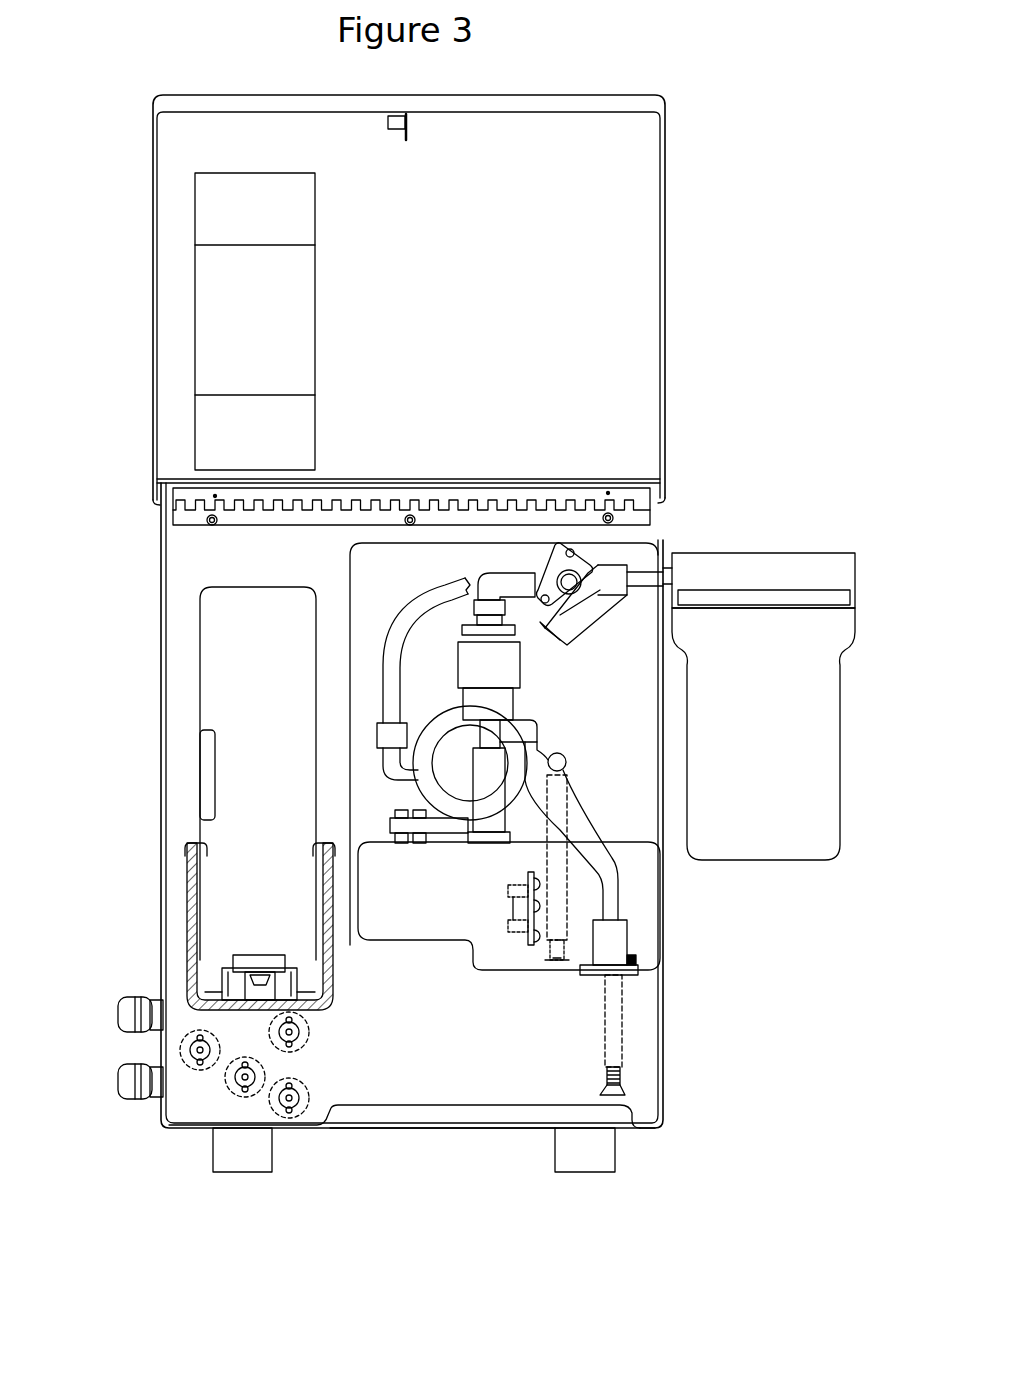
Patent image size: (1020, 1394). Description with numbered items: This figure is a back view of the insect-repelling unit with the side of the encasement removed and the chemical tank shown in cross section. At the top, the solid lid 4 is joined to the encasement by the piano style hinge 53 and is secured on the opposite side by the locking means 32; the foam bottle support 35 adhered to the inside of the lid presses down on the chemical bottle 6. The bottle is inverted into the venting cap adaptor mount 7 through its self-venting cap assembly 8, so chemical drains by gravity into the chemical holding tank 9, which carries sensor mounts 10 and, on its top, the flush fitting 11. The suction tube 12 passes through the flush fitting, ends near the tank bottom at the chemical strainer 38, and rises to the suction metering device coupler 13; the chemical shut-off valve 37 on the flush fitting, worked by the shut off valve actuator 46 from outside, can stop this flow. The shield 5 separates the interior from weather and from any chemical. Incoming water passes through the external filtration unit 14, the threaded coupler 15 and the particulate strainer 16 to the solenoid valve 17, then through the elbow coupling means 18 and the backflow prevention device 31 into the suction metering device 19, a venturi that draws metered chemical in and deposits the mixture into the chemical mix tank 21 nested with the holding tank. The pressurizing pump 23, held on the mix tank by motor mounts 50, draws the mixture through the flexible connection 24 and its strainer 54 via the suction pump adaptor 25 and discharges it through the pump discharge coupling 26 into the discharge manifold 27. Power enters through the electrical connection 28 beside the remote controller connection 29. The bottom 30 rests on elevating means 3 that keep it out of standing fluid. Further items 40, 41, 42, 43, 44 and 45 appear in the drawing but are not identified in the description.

The elevating means 3 is at (617, 1180).
The solid lid 4 is at (613, 253).
The shield 5 is at (350, 665).
The chemical bottle 6 is at (218, 608).
The venting cap adaptor mount 7 is at (260, 977).
The self-venting cap assembly 8 is at (212, 982).
The chemical holding tank 9 is at (647, 1022).
The sensor mounts 10 is at (263, 1112).
The flush fitting 11 is at (598, 962).
The suction tube 12 is at (625, 1047).
The suction metering device coupler 13 is at (543, 735).
The external filtration unit 14 is at (858, 558).
The threaded coupler 15 is at (663, 556).
The particulate strainer 16 is at (596, 607).
The solenoid valve 17 is at (582, 558).
The coupling means 18 is at (508, 565).
The suction metering device 19 is at (518, 700).
The chemical mix tank 21 is at (380, 867).
The pressurizing pump 23 is at (432, 785).
The flexible connection 24 is at (570, 885).
The suction pump adaptor 25 is at (572, 762).
The pump discharge coupling 26 is at (376, 738).
The discharge manifold 27 is at (380, 624).
The electrical connection 28 is at (115, 1083).
The remote controller connection 29 is at (117, 1012).
The bottom 30 is at (540, 1133).
The backflow prevention device 31 is at (520, 663).
The locking means 32 is at (415, 127).
The foam bottle support 35 is at (225, 305).
The chemical shut-off valve 37 is at (628, 924).
The chemical strainer 38 is at (630, 1093).
The connector 40 is at (294, 1105).
The connector 41 is at (250, 1082).
The connector 42 is at (200, 1056).
The connector 43 is at (292, 1037).
The terminal 44 is at (511, 937).
The terminal 45 is at (506, 898).
The shut off valve actuator 46 is at (641, 963).
The motor mounts 50 is at (386, 820).
The piano style hinge 53 is at (187, 518).
The strainer 54 is at (557, 967).